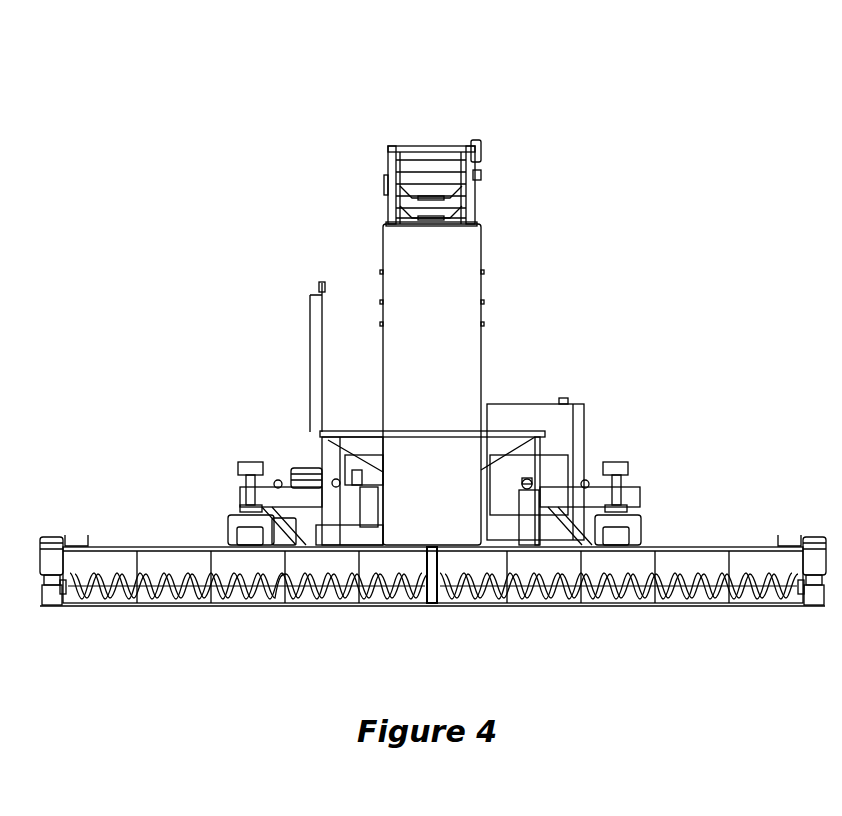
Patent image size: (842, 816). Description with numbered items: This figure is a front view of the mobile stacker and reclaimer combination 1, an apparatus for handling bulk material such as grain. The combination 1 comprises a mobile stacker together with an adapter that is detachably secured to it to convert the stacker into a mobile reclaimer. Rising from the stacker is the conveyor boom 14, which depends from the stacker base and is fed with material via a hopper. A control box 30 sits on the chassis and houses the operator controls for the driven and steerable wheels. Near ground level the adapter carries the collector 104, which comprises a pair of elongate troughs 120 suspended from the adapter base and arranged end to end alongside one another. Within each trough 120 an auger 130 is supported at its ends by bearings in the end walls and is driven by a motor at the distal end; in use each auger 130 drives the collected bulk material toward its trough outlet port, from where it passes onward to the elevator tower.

The mobile stacker and reclaimer combination 1 is at (579, 271).
The conveyor boom 14 is at (478, 138).
The control box 30 is at (587, 407).
The collector 104 is at (85, 612).
The elongate trough 120 is at (175, 565).
The auger 130 is at (238, 590).